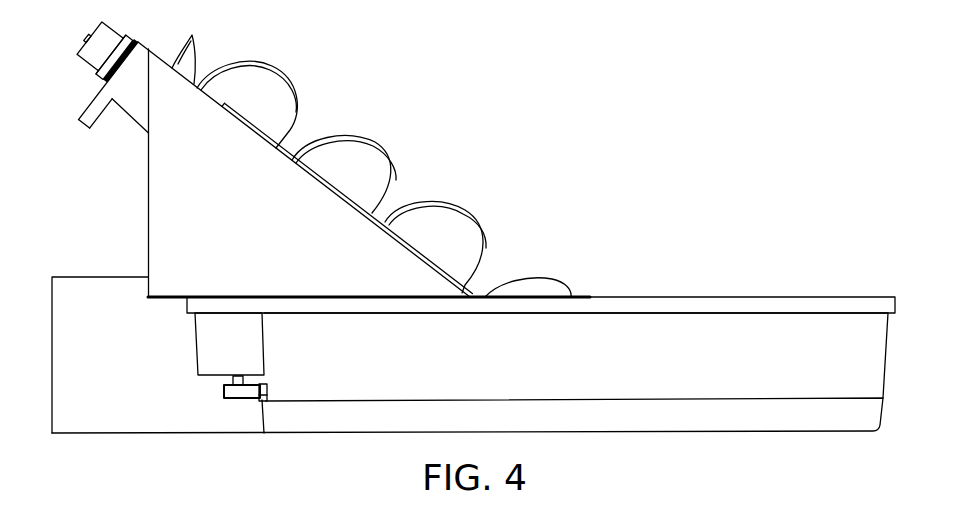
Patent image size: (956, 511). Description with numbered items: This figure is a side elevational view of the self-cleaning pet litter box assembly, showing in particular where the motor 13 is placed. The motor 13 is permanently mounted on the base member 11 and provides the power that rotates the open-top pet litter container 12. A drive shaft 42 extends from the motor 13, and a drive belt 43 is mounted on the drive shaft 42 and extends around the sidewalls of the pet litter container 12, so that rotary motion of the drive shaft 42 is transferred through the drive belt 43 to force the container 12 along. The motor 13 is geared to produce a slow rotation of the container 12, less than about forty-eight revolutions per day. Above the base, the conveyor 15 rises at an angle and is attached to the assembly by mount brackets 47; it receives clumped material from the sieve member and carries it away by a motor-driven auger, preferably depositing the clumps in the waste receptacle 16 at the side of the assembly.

The base member 11 is at (357, 427).
The open-top pet litter container 12 is at (603, 395).
The motor 13 is at (198, 332).
The conveyor 15 is at (164, 204).
The waste receptacle 16 is at (73, 425).
The drive shaft 42 is at (224, 392).
The drive belt 43 is at (255, 400).
The mount brackets 47 is at (263, 232).